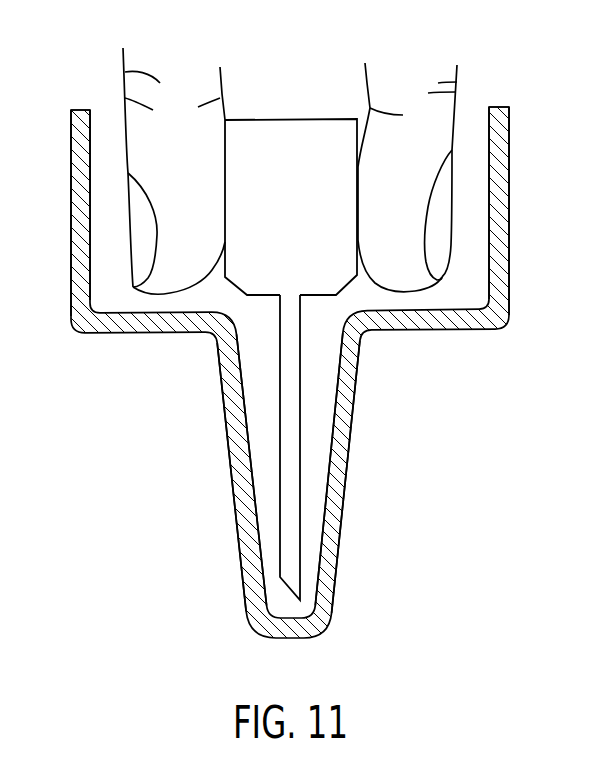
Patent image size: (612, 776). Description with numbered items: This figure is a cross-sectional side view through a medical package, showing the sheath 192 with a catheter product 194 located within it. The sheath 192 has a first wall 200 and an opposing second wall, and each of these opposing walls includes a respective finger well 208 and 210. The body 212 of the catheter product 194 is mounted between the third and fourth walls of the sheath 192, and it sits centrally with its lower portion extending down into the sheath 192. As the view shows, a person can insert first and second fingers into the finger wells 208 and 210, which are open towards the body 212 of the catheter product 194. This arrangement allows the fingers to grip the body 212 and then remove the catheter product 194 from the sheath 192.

The sheath 192 is at (277, 372).
The catheter product 194 is at (291, 328).
The first wall 200 is at (225, 412).
The finger well 208 is at (511, 175).
The finger well 210 is at (70, 178).
The body 212 is at (305, 218).